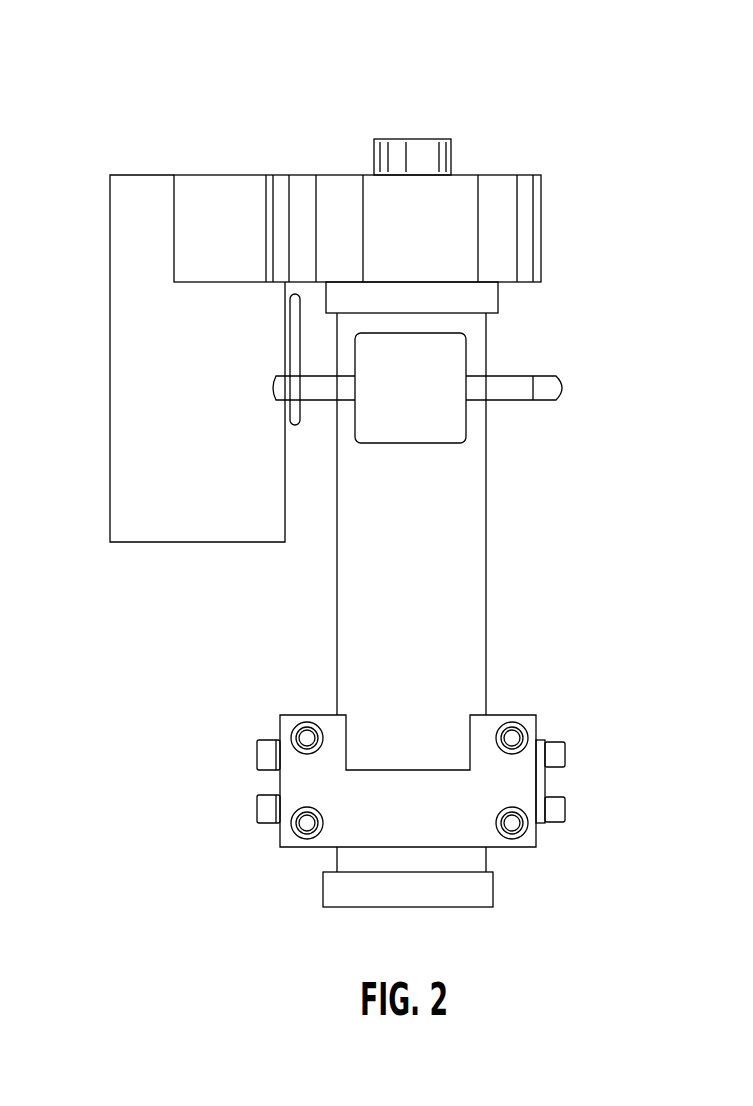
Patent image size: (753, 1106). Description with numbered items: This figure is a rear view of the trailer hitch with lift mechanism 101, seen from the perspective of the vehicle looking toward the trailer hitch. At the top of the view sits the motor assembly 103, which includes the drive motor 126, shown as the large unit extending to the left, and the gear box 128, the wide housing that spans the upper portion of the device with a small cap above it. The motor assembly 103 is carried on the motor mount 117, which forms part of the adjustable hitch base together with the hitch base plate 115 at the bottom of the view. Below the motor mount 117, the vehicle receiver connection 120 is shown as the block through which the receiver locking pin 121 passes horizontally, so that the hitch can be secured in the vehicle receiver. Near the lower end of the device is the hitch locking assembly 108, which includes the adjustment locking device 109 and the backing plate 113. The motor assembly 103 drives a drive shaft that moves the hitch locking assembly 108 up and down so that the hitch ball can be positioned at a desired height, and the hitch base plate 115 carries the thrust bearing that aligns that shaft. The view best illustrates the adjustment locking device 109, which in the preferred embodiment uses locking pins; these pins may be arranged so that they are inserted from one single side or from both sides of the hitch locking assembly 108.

The trailer hitch with lift mechanism 101 is at (535, 58).
The motor assembly 103 is at (145, 146).
The hitch locking assembly 108 is at (597, 708).
The adjustment locking device 109 is at (257, 807).
The backing plate 113 is at (502, 850).
The hitch base plate 115 is at (322, 890).
The motor mount 117 is at (492, 300).
The vehicle receiver connection 120 is at (452, 423).
The receiver locking pin 121 is at (327, 388).
The drive motor 126 is at (110, 317).
The gear box 128 is at (298, 175).